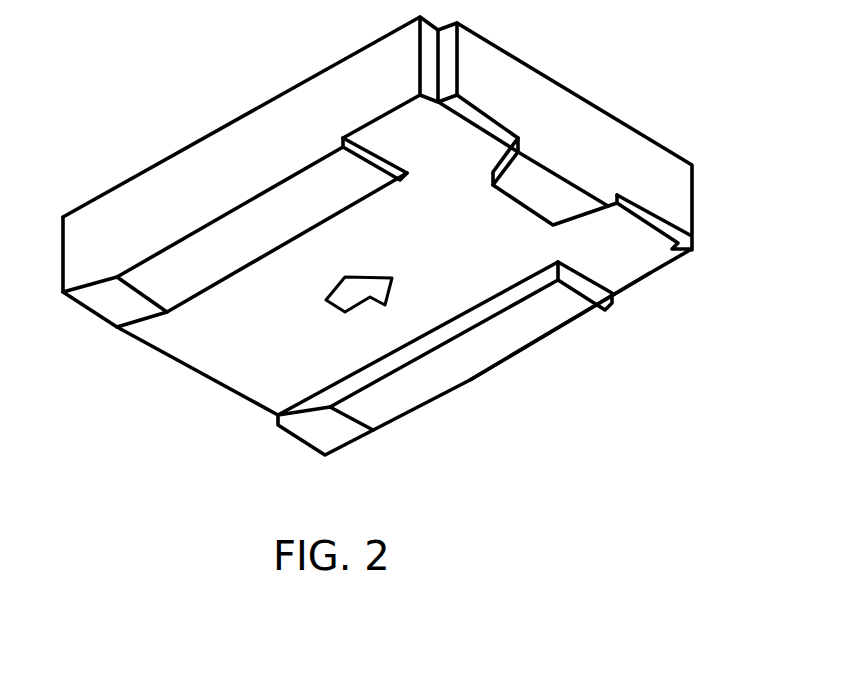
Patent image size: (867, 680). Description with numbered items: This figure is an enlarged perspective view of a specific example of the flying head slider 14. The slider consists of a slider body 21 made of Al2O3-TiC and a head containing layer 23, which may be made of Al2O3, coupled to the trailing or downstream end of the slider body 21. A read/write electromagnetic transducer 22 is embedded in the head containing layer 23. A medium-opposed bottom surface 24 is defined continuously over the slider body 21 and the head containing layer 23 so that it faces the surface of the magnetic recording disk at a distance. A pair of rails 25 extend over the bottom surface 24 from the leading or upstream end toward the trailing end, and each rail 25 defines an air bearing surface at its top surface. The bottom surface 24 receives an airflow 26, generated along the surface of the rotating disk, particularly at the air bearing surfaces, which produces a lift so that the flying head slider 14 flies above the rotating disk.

The flying head slider 14 is at (241, 106).
The slider body 21 is at (650, 276).
The read/write electromagnetic transducer 22 is at (568, 189).
The head containing layer 23 is at (695, 196).
The bottom surface 24 is at (463, 254).
The rail 25 is at (228, 268).
The airflow 26 is at (343, 311).